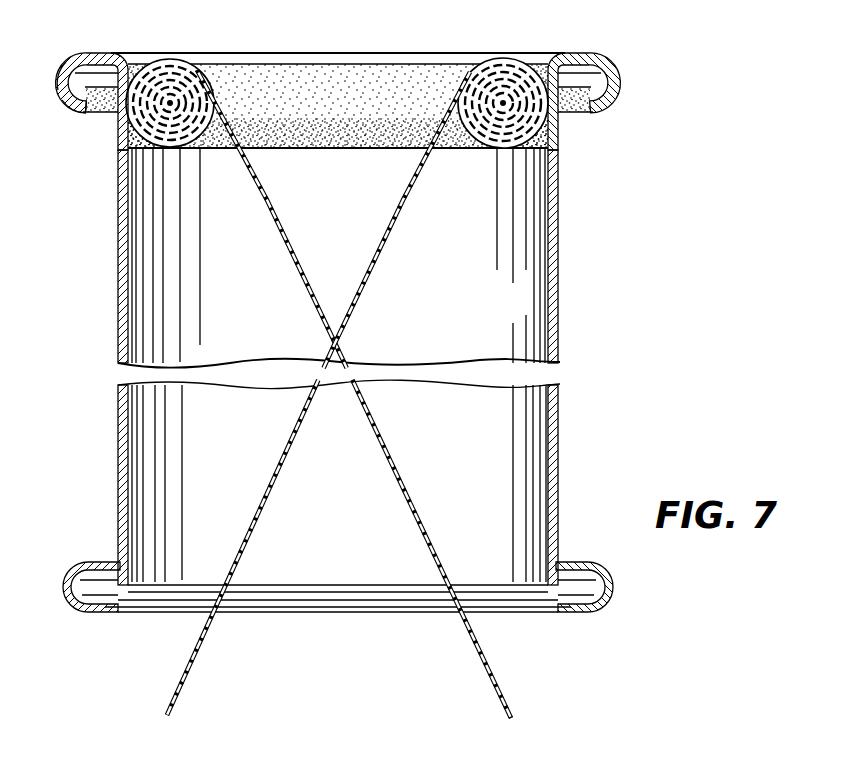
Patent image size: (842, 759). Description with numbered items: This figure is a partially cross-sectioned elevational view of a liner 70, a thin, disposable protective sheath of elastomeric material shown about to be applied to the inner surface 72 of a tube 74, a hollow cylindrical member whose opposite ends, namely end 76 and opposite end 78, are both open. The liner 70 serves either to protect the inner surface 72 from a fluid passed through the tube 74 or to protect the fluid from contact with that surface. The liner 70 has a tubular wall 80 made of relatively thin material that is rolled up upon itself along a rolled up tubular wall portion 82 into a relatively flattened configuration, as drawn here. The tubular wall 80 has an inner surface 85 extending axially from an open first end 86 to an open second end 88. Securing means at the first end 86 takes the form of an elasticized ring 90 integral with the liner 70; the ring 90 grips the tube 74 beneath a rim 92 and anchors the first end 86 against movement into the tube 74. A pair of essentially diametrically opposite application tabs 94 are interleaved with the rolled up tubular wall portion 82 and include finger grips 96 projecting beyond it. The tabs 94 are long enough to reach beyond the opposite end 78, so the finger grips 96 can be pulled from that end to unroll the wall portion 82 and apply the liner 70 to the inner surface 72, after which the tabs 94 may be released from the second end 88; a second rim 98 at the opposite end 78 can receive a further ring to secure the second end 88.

The liner 70 is at (372, 78).
The inner surface 72 is at (552, 300).
The tube 74 is at (558, 270).
The end 76 is at (73, 92).
The opposite end 78 is at (92, 615).
The tubular wall 80 is at (516, 56).
The rolled up tubular wall portion 82 is at (326, 72).
The inner surface 85 is at (133, 62).
The first end 86 is at (72, 110).
The second end 88 is at (183, 60).
The elasticized ring 90 is at (62, 80).
The rim 92 is at (84, 114).
The application tabs 94 is at (380, 257).
The finger grips 96 is at (177, 706).
The second rim 98 is at (590, 562).